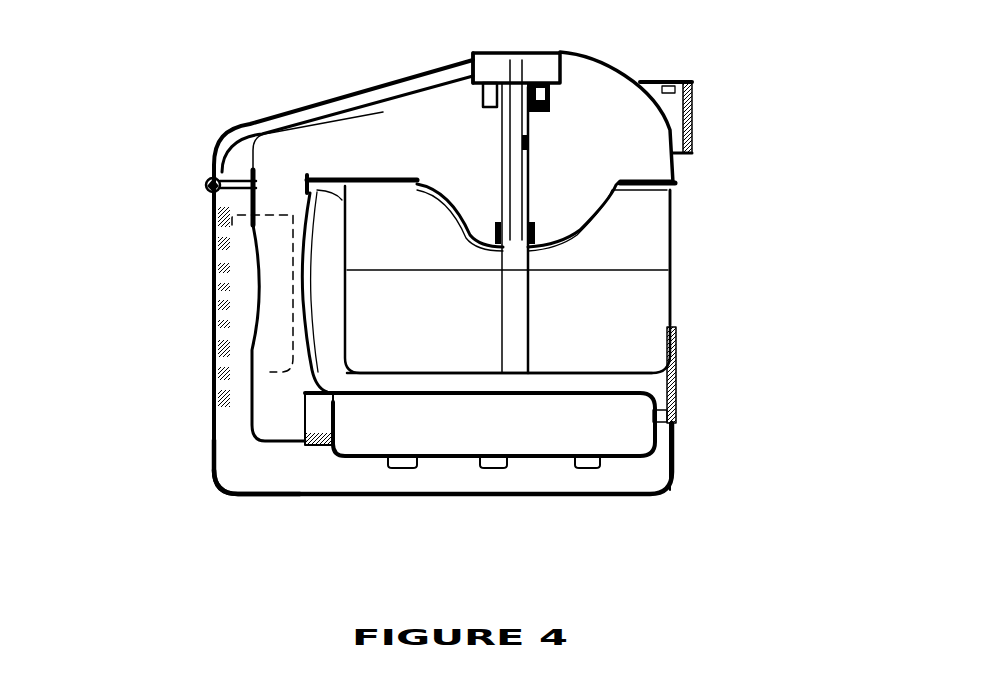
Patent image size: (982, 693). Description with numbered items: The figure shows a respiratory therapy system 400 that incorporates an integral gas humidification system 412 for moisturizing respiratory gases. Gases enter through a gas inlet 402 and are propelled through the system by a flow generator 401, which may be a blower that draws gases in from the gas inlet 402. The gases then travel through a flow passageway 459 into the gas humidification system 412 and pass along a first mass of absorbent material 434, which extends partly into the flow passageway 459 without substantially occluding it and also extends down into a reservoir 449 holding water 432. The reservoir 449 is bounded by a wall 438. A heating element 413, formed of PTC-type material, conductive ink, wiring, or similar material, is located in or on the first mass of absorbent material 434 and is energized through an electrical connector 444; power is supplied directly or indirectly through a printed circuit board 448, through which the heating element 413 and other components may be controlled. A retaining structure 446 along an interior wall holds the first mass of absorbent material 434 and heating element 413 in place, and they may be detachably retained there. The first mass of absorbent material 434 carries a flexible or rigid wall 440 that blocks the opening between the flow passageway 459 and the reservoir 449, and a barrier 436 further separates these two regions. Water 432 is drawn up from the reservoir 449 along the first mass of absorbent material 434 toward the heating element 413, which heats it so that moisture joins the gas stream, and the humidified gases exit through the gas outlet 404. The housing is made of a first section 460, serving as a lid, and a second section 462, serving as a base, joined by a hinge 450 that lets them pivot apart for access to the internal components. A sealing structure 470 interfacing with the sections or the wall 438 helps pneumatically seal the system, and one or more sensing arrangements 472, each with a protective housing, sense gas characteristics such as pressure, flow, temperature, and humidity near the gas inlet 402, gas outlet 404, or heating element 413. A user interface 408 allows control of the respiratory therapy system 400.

The respiratory therapy system 400 is at (687, 492).
The flow generator 401 is at (673, 458).
The gas inlet 402 is at (672, 430).
The gas outlet 404 is at (690, 82).
The user interface 408 is at (340, 100).
The gas humidification system 412 is at (697, 297).
The heating element 413 is at (507, 122).
The water 432 is at (613, 290).
The first mass of absorbent material 434 is at (513, 320).
The barrier 436 is at (612, 230).
The wall 438 is at (670, 203).
The wall 440 is at (570, 60).
The electrical connector 444 is at (519, 75).
The retaining structure 446 is at (483, 58).
The printed circuit board 448 is at (210, 413).
The reservoir 449 is at (622, 250).
The hinge 450 is at (207, 180).
The flow passageway 459 is at (270, 383).
The first section 460 is at (253, 125).
The second section 462 is at (223, 497).
The sealing structure 470 is at (673, 170).
The sensing arrangement 472 is at (523, 143).